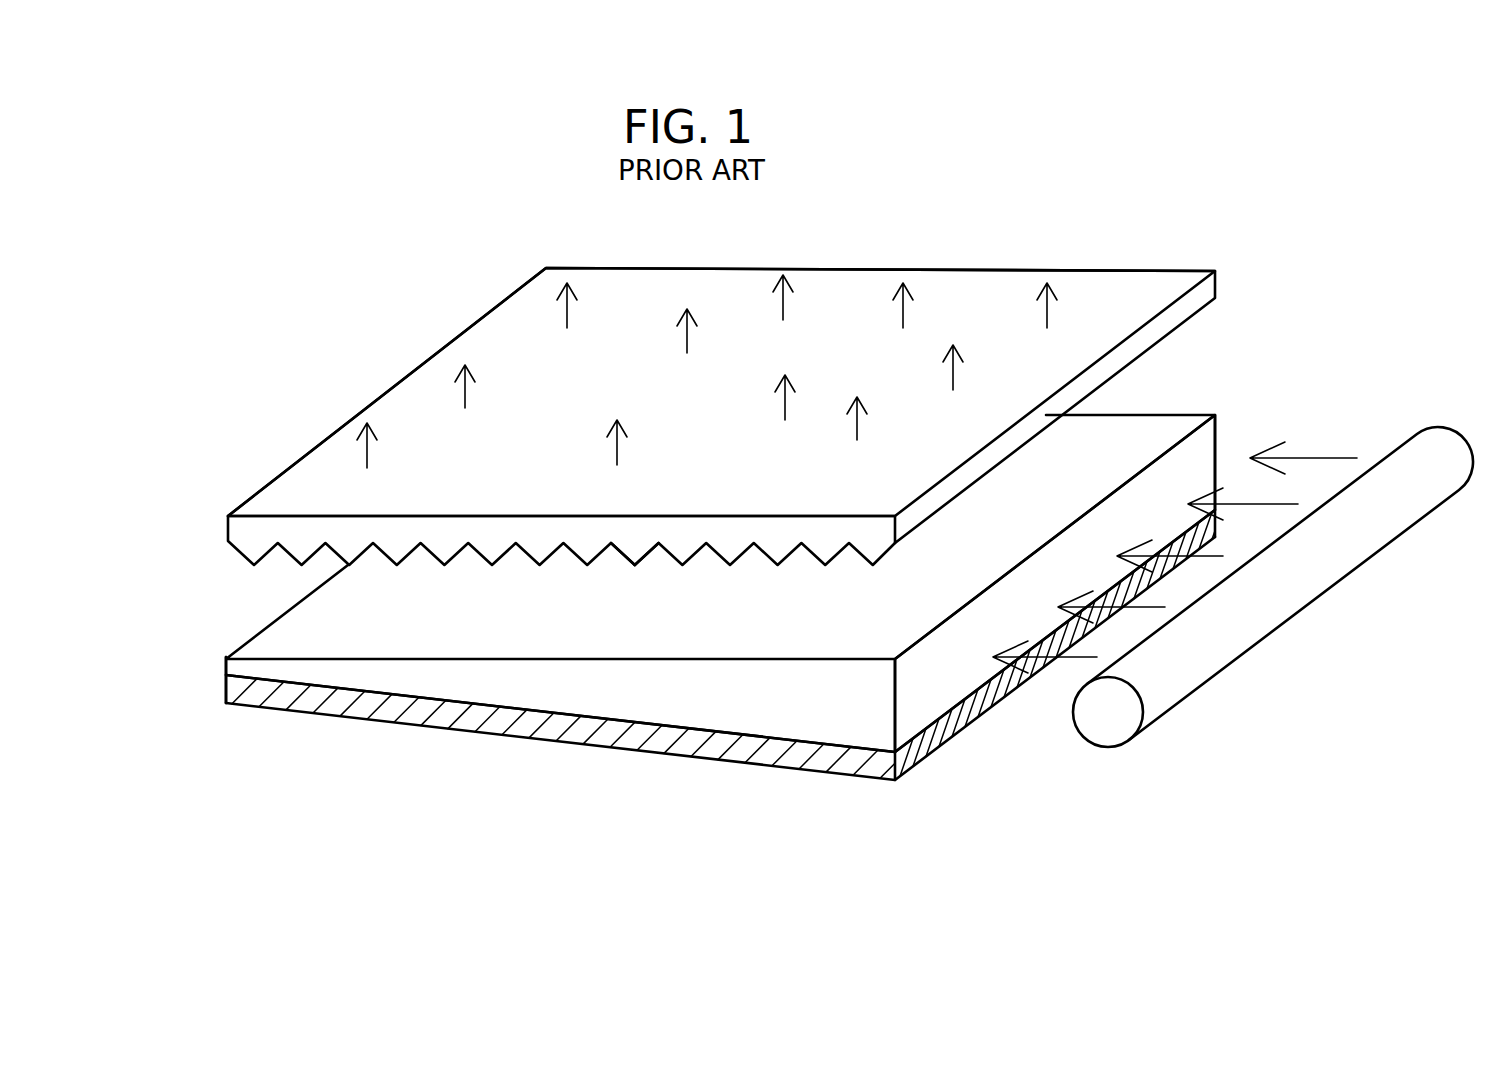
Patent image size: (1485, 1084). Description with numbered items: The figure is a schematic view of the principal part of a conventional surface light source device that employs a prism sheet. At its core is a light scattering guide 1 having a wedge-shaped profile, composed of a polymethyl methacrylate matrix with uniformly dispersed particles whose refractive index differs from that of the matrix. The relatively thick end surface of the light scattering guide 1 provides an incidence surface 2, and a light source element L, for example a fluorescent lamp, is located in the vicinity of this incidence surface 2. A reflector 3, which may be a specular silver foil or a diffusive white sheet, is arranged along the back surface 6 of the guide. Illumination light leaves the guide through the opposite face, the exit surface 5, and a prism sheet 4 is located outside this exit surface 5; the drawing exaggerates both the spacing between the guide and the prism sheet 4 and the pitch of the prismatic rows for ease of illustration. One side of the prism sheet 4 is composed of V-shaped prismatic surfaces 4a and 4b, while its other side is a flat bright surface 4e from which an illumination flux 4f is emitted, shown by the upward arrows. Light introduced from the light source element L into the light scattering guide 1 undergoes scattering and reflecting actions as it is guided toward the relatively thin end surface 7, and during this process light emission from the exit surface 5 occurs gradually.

The light scattering guide 1 is at (815, 630).
The incidence surface 2 is at (928, 687).
The reflector 3 is at (558, 727).
The prism sheet 4 is at (1218, 278).
The prismatic surface 4a is at (627, 558).
The prismatic surface 4b is at (645, 555).
The flat surface (bright surface) 4e is at (945, 298).
The illumination flux 4f is at (615, 447).
The exit surface 5 is at (1135, 442).
The back surface 6 is at (323, 688).
The thin end surface 7 is at (226, 660).
The light source element L is at (1330, 568).